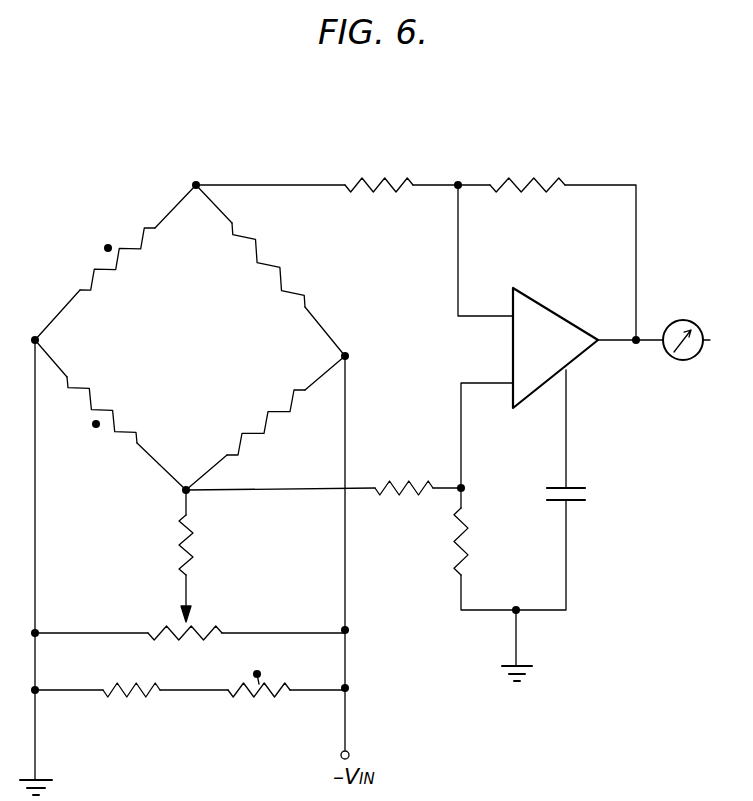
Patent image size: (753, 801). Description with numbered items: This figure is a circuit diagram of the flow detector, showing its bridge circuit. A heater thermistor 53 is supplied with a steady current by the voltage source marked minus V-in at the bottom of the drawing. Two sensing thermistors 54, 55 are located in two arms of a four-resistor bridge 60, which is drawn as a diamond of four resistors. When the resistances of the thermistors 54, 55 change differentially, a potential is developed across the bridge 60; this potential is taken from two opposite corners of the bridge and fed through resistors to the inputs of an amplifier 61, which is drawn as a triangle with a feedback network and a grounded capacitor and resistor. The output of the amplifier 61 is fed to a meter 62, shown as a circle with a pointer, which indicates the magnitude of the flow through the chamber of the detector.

The heater thermistor 53 is at (262, 697).
The thermistor 54 is at (108, 246).
The thermistor 55 is at (113, 406).
The four-resistor bridge 60 is at (294, 266).
The amplifier 61 is at (548, 360).
The meter 62 is at (689, 320).